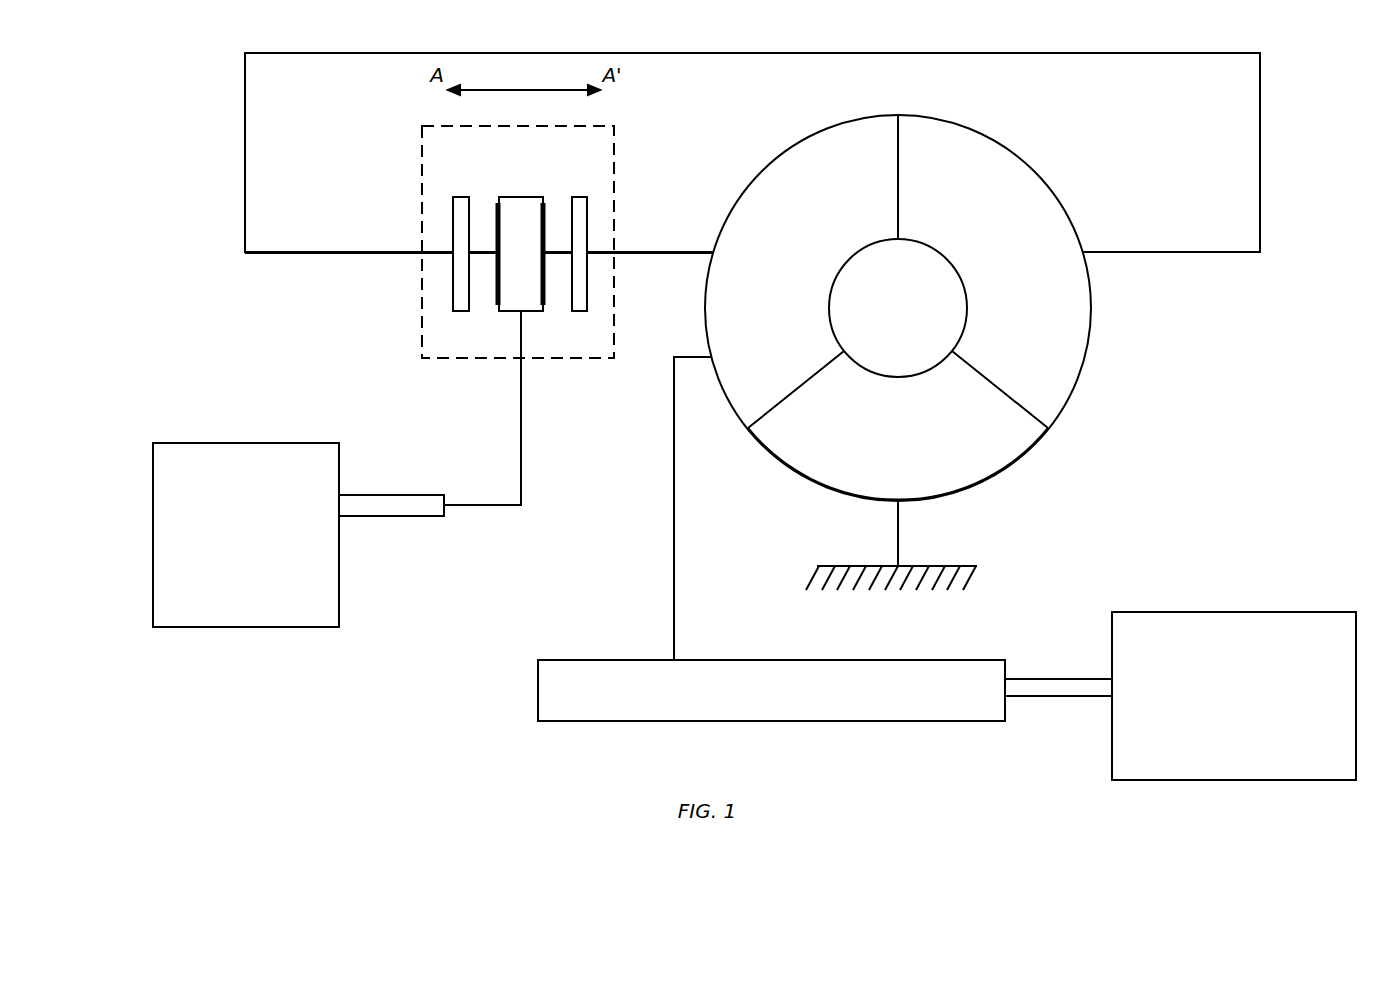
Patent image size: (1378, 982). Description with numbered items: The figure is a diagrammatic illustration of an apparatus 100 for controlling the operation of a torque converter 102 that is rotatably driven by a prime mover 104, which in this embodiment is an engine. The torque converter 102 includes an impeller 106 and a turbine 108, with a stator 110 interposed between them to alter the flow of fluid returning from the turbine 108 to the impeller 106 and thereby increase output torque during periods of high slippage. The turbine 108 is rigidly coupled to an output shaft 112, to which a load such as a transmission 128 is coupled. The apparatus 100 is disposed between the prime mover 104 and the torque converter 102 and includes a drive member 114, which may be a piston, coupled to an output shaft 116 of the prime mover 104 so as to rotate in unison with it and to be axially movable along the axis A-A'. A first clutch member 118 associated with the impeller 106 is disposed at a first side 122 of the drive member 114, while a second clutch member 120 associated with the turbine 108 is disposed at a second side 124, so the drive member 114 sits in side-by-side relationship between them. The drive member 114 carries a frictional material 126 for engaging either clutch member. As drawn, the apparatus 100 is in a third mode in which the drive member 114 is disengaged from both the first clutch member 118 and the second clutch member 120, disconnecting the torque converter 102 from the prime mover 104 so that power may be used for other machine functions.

The apparatus 100 is at (613, 139).
The torque converter 102 is at (1049, 187).
The prime mover 104 is at (230, 545).
The impeller 106 is at (997, 278).
The turbine 108 is at (760, 288).
The stator 110 is at (885, 450).
The output shaft 112 is at (753, 700).
The drive member 114 is at (505, 261).
The output shaft 116 is at (385, 495).
The first clutch member 118 is at (461, 196).
The second clutch member 120 is at (581, 196).
The first side 122 is at (558, 258).
The second side 124 is at (484, 258).
The frictional material 126 is at (496, 222).
The transmission 128 is at (1218, 714).